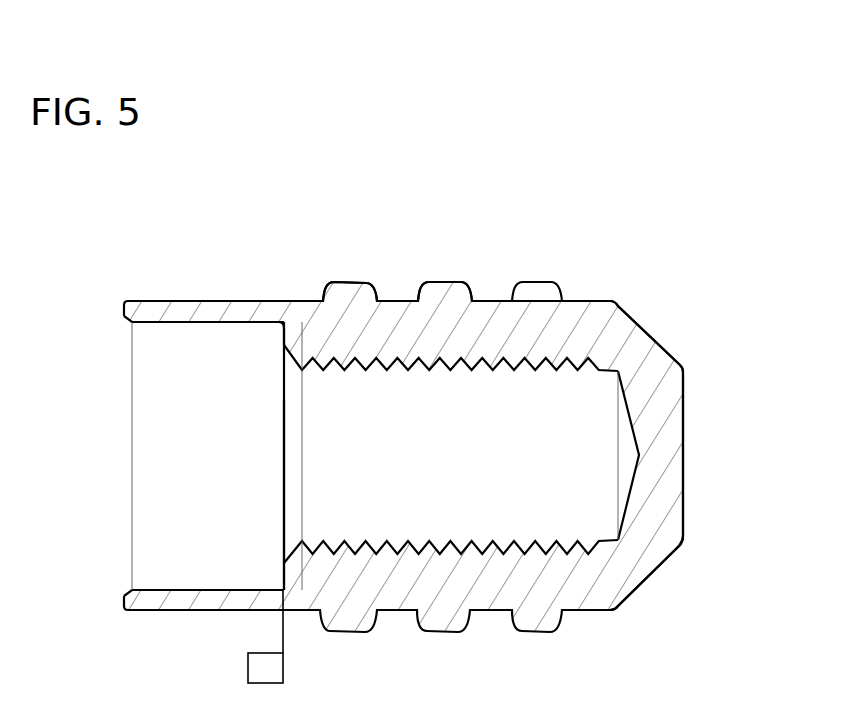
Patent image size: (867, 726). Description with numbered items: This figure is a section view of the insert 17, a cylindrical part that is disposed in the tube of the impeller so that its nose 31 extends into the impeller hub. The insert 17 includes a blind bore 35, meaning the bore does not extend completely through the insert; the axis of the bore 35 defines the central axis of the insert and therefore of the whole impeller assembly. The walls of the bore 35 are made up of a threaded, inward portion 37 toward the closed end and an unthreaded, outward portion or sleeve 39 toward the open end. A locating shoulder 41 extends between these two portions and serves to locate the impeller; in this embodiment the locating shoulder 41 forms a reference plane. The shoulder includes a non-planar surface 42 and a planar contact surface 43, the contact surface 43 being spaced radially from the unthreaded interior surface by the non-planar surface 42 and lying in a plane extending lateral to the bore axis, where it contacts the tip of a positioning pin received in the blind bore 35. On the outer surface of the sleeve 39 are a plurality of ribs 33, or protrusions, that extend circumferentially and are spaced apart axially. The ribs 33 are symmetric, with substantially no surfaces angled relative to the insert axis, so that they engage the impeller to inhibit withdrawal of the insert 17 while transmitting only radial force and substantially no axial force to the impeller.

The insert 17 is at (612, 162).
The nose 31 is at (640, 322).
The ribs 33 is at (535, 282).
The blind bore 35 is at (432, 478).
The threaded inward portion 37 is at (540, 542).
The unthreaded outward portion or sleeve 39 is at (200, 590).
The locating shoulder 41 is at (290, 324).
The non-planar surface 42 is at (283, 578).
The planar contact surface 43 is at (283, 568).